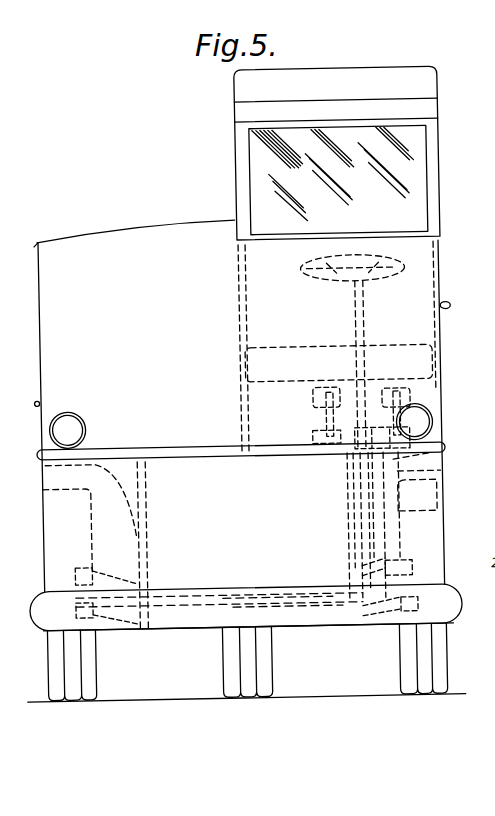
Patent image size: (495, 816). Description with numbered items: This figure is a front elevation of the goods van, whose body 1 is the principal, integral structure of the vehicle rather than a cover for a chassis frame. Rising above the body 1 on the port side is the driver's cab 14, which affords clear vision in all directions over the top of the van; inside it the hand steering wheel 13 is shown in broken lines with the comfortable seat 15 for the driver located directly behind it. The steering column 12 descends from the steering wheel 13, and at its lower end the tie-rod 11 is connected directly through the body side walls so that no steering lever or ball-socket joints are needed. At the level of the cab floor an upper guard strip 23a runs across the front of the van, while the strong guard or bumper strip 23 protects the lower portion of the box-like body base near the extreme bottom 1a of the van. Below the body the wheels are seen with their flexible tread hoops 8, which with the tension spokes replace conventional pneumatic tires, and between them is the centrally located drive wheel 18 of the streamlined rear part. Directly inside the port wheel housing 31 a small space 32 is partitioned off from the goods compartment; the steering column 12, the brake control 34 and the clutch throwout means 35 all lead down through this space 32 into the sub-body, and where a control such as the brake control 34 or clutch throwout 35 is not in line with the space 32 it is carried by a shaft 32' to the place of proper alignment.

The body 1 is at (48, 344).
The extreme bottom of the van 1a is at (336, 628).
The flexible tread hoops 8 is at (44, 650).
The tie-rod 11 is at (186, 595).
The steering column 12 is at (372, 323).
The hand steering wheel 13 is at (398, 263).
The driver's cab 14 is at (440, 117).
The seat 15 is at (271, 352).
The drive wheel 18 is at (268, 659).
The guard strip 23 is at (461, 607).
The upper guard strip 23a is at (450, 451).
The port wheel housing 31 is at (347, 508).
The small space 32 is at (434, 481).
The shaft 32' is at (350, 431).
The brake control 34 is at (314, 401).
The clutch throwout means 35 is at (411, 397).